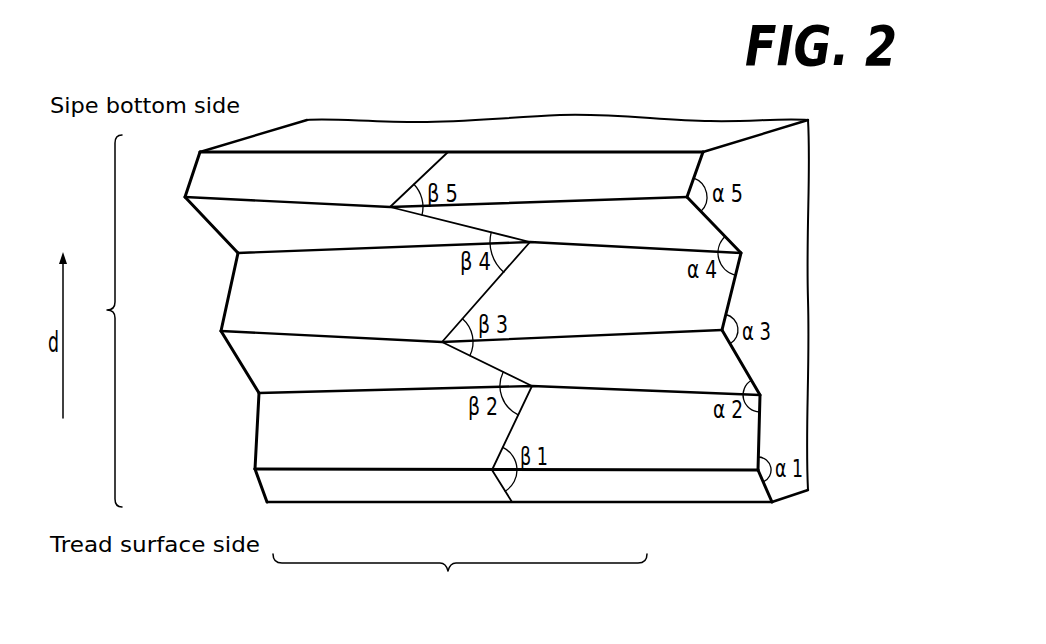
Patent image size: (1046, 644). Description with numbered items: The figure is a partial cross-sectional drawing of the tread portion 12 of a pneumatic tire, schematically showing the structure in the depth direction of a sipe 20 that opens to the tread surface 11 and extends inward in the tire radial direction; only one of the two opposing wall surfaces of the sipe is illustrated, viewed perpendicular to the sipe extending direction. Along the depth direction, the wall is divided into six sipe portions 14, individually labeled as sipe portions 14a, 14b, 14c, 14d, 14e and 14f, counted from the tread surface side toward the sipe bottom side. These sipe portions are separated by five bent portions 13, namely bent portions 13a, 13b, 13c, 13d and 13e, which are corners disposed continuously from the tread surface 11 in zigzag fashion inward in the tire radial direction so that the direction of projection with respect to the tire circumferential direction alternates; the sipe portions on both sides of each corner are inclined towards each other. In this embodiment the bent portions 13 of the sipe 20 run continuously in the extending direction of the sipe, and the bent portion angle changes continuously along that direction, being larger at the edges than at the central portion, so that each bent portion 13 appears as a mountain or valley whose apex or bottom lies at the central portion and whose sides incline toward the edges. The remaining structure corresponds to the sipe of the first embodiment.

The tread surface 11 is at (677, 502).
The tread portion 12 is at (775, 235).
The bent portions 13 is at (460, 581).
The bent portion 13a is at (633, 470).
The bent portion 13b is at (602, 390).
The bent portion 13c is at (393, 342).
The bent portion 13d is at (342, 252).
The bent portion 13e is at (310, 205).
The sipe portions 14 is at (100, 321).
The sipe portion 14a is at (277, 482).
The sipe portion 14b is at (287, 433).
The sipe portion 14c is at (267, 352).
The sipe portion 14d is at (253, 288).
The sipe portion 14e is at (227, 217).
The sipe portion 14f is at (212, 177).
The sipe 20 is at (549, 175).